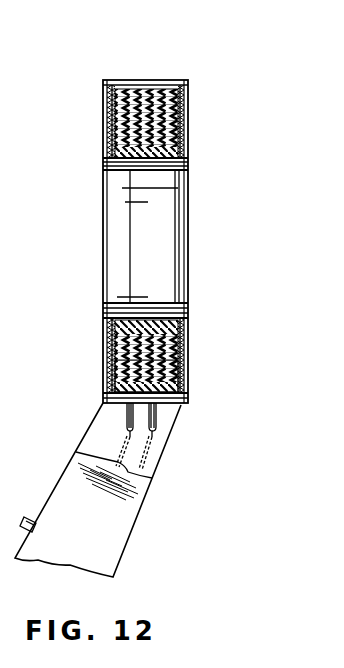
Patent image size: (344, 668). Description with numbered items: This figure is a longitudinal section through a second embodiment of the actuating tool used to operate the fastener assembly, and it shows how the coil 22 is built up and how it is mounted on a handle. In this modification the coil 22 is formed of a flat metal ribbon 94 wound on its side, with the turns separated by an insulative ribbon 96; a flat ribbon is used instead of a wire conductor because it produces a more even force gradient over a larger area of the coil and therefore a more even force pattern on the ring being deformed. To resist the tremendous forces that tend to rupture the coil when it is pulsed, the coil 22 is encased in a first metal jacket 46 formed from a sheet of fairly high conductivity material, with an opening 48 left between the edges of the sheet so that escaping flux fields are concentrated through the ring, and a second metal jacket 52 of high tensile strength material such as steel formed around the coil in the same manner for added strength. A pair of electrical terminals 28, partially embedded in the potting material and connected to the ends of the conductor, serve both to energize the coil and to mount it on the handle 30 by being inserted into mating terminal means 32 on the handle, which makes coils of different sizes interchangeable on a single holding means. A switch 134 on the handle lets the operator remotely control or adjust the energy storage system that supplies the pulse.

The coil 22 is at (200, 194).
The flat metal ribbon 94 is at (184, 103).
The insulative ribbon 96 is at (113, 121).
The opening 48 is at (112, 177).
The first metal jacket 46 is at (185, 342).
The second metal jacket 52 is at (185, 378).
The electrical terminals 28 is at (133, 418).
The handle 30 is at (149, 428).
The mating terminal means 32 is at (136, 532).
The switch 134 is at (30, 516).